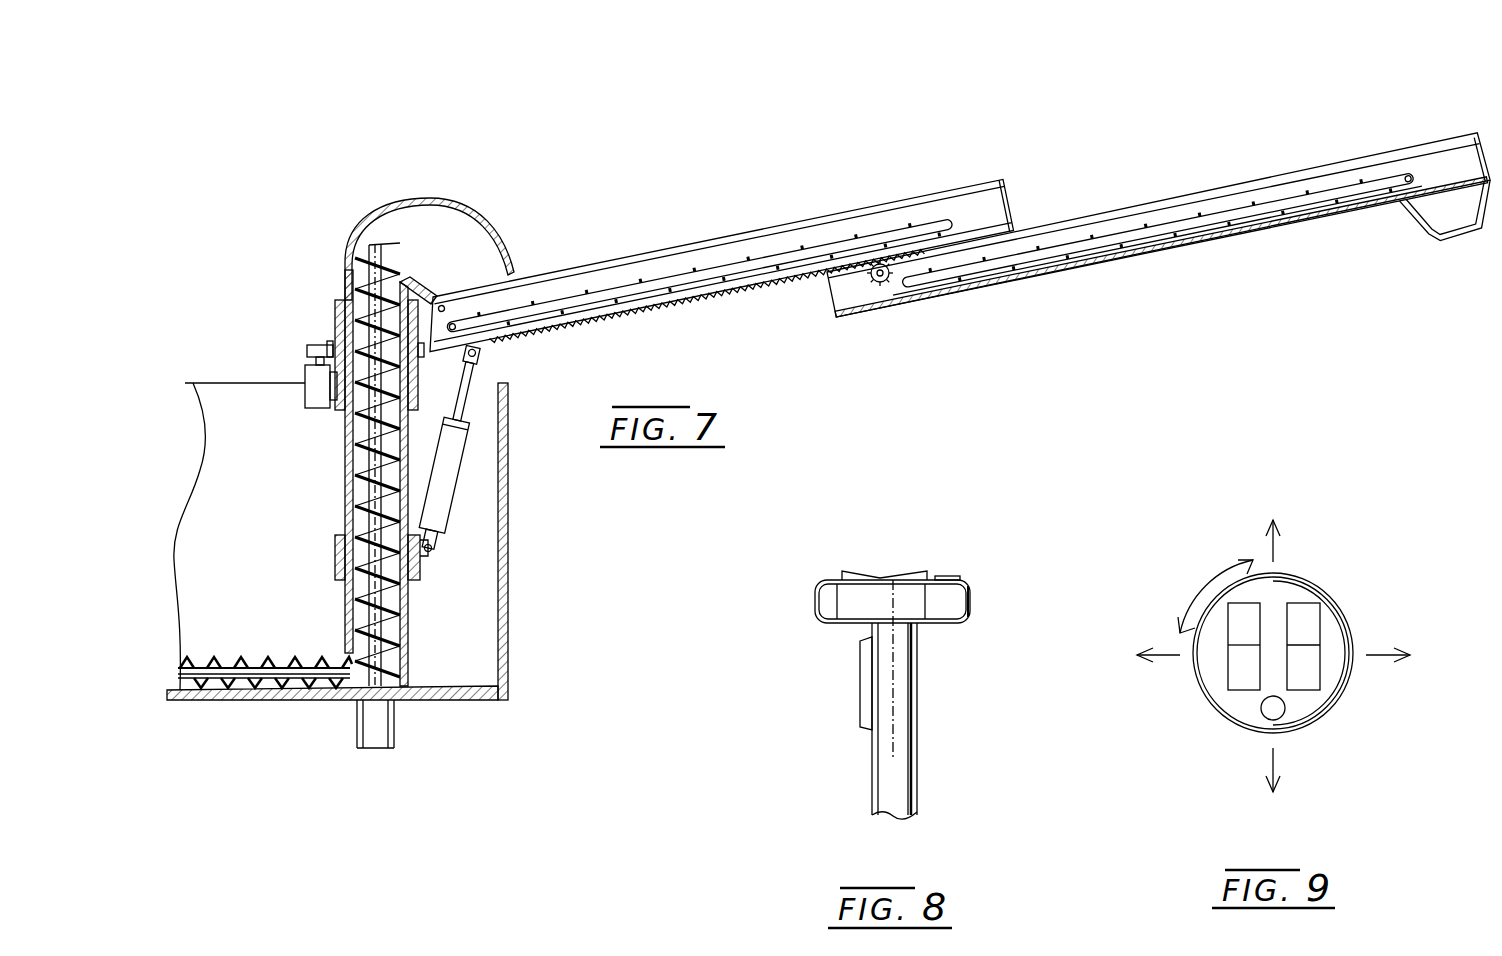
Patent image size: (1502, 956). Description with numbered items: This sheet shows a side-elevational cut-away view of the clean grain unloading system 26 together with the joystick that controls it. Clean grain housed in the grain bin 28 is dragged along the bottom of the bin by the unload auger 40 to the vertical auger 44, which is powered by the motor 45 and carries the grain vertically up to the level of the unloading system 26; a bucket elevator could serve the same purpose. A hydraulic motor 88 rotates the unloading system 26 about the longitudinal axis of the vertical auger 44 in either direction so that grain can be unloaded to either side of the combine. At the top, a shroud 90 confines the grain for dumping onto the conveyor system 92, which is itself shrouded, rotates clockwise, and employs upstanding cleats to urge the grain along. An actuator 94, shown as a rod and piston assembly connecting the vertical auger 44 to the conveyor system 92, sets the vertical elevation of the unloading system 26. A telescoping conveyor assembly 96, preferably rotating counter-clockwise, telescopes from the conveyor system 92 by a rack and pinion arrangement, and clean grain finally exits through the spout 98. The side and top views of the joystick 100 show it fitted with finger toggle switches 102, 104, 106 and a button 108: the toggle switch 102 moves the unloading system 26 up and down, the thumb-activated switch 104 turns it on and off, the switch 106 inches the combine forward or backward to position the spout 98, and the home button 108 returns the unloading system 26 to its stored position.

In FIG. 7, the clean grain unloading system 26 is at (950, 130).
In FIG. 7, the grain bin 28 is at (508, 590).
In FIG. 7, the unload auger 40 is at (200, 666).
In FIG. 7, the vertical auger 44 is at (352, 478).
In FIG. 7, the motor 45 is at (396, 735).
In FIG. 7, the motor 88 is at (305, 385).
In FIG. 7, the shroud 90 is at (420, 200).
In FIG. 7, the conveyor system 92 is at (665, 248).
In FIG. 7, the actuator 94 is at (470, 445).
In FIG. 7, the telescoping conveyor assembly 96 is at (1183, 190).
In FIG. 7, the spout 98 is at (1415, 230).
In FIG. 8, the joystick 100 is at (918, 702).
In FIG. 8, the toggle switch 102 is at (862, 650).
In FIG. 8, the switch 104 is at (862, 572).
In FIG. 9, the switch 104 is at (1240, 675).
In FIG. 9, the switch 106 is at (1305, 608).
In FIG. 8, the button 108 is at (950, 578).
In FIG. 9, the button 108 is at (1275, 712).